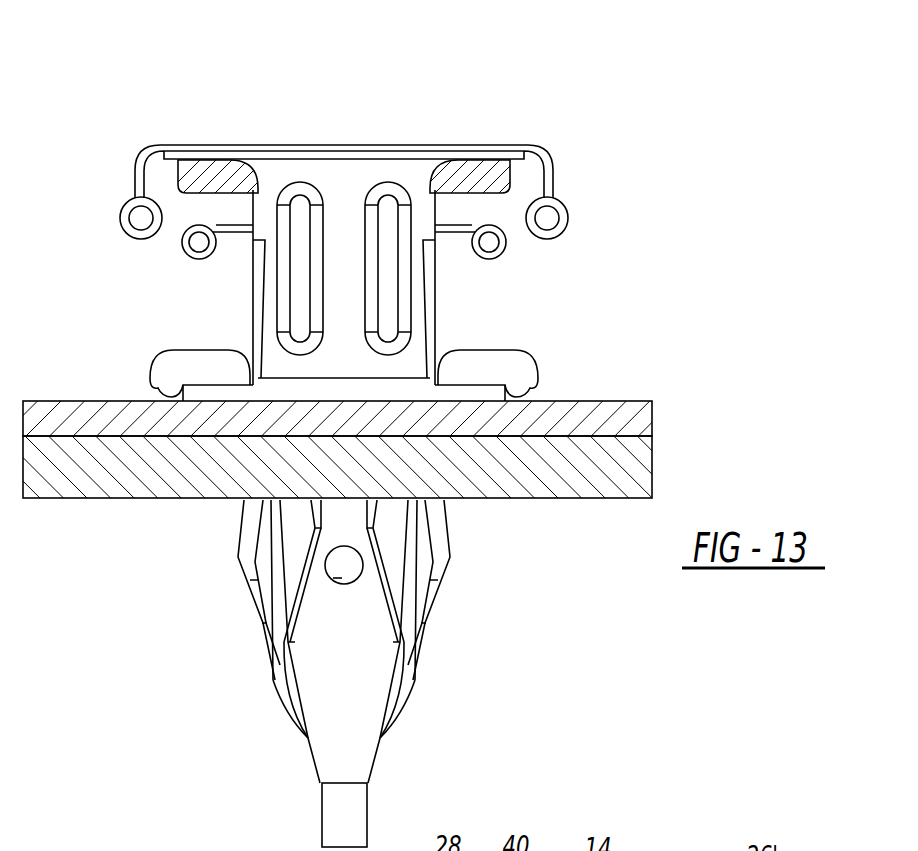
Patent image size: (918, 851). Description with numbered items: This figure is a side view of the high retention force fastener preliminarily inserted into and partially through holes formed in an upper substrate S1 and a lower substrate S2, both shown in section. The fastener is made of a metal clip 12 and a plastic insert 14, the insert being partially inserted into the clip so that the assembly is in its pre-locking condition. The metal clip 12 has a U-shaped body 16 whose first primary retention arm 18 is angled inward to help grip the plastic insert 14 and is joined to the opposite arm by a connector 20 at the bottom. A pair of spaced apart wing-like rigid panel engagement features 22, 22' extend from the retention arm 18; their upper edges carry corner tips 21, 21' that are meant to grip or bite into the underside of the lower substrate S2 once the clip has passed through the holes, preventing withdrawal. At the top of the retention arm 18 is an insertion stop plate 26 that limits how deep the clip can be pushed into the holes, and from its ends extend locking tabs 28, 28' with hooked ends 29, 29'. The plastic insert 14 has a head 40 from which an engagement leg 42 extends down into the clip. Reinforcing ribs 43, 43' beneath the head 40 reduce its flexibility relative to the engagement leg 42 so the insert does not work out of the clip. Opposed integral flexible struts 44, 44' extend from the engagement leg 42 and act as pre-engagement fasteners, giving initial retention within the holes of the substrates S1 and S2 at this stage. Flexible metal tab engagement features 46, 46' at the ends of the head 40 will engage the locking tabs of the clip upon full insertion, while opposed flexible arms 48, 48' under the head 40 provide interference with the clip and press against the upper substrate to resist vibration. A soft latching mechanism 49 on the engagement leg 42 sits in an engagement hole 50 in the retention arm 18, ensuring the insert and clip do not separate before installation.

The metal clip 12 is at (355, 704).
The plastic insert 14 is at (343, 195).
The U-shaped body 16 is at (356, 750).
The first primary retention arm 18 is at (337, 669).
The connector 20 is at (342, 836).
The corner tip 21 is at (219, 524).
The corner tip 21' is at (451, 515).
The wing-like rigid panel engagement feature 22 is at (242, 633).
The wing-like rigid panel engagement feature 22' is at (454, 633).
The insertion stop plate 26 is at (225, 395).
The locking tab 28 is at (178, 345).
The locking tab 28' is at (540, 351).
The hooked end 29 is at (133, 371).
The hooked end 29' is at (605, 371).
The head 40 is at (253, 144).
The engagement leg 42 is at (418, 300).
The reinforcing rib 43 is at (211, 99).
The reinforcing rib 43' is at (477, 108).
The integral flexible strut 44 is at (221, 590).
The integral flexible strut 44' is at (480, 590).
The metal tab engagement feature 46 is at (100, 204).
The metal tab engagement feature 46' is at (614, 201).
The flexible arm 48 is at (168, 255).
The flexible arm 48' is at (541, 260).
The soft latching mechanism 49 is at (347, 564).
The engagement hole 50 is at (342, 578).
The upper substrate S1 is at (25, 413).
The lower substrate S2 is at (24, 448).